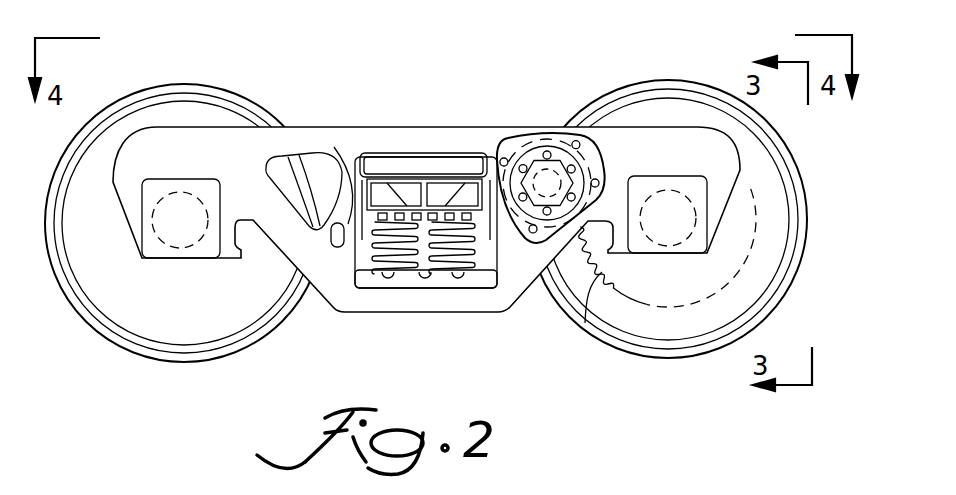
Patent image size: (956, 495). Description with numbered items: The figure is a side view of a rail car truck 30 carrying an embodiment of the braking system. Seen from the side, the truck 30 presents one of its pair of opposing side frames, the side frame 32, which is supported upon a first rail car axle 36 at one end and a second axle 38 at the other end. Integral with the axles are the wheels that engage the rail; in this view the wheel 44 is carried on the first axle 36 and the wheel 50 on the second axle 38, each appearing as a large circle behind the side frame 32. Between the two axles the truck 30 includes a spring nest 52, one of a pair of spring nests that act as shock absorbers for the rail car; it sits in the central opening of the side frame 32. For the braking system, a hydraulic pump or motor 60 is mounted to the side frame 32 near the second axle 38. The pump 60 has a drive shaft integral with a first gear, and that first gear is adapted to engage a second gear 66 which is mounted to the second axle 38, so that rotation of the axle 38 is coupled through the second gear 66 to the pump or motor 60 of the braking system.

The rail car truck 30 is at (275, 85).
The side frame 32 is at (405, 305).
The first rail car axle 36 is at (176, 250).
The second axle 38 is at (646, 258).
The wheel 44 is at (97, 277).
The wheel 50 is at (775, 195).
The spring nest 52 is at (463, 263).
The hydraulic pump or motor 60 is at (538, 173).
The second gear 66 is at (600, 267).